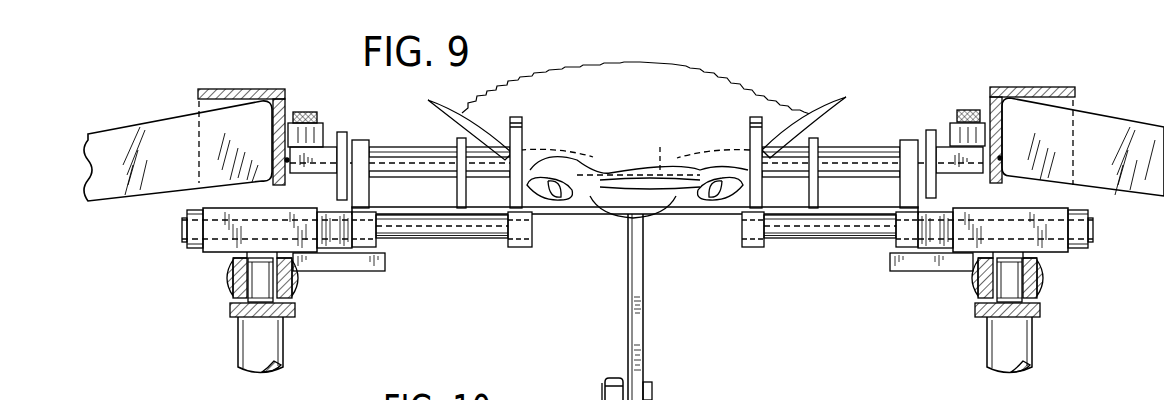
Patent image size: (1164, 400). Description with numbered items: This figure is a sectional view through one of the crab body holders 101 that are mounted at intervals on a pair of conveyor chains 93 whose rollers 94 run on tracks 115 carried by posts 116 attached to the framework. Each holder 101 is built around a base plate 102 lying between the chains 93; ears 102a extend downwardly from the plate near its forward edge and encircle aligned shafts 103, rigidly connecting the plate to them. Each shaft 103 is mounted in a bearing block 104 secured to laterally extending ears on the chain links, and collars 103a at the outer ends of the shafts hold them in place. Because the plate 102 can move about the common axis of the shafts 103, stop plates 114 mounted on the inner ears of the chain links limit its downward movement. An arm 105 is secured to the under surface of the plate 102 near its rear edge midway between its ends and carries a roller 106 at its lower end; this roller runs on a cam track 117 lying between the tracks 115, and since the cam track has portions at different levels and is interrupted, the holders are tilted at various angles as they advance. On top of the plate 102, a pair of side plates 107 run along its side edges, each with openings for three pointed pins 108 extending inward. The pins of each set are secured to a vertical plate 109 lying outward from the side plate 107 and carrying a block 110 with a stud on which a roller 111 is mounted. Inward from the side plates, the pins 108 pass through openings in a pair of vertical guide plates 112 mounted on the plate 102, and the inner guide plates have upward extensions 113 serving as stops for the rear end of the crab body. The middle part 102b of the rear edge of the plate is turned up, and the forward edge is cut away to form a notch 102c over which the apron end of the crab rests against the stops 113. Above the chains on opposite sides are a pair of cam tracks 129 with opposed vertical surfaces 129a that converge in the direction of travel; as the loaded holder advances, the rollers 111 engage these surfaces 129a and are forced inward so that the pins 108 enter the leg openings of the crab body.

The conveyor chain 93 is at (236, 290).
The roller 94 is at (258, 277).
The holder 101 is at (706, 244).
The base plate 102 is at (860, 214).
The ear 102a is at (382, 244).
The middle part of rear edge 102b is at (660, 168).
The notch 102c is at (561, 214).
The shaft 103 is at (472, 232).
The collar 103a is at (192, 238).
The bearing block 104 is at (215, 225).
The arm 105 is at (640, 304).
The roller 106 is at (612, 378).
The side plate 107 is at (360, 145).
The pin 108 is at (400, 148).
The vertical plate 109 is at (343, 132).
The block 110 is at (330, 173).
The roller 111 is at (318, 122).
The vertical guide plate 112 is at (457, 140).
The upward extension 113 is at (518, 128).
The stop plate 114 is at (333, 268).
The track 115 is at (298, 312).
The post 116 is at (275, 345).
The cam track 117 is at (655, 393).
The cam track 129 is at (255, 90).
The vertical surface 129a is at (287, 96).